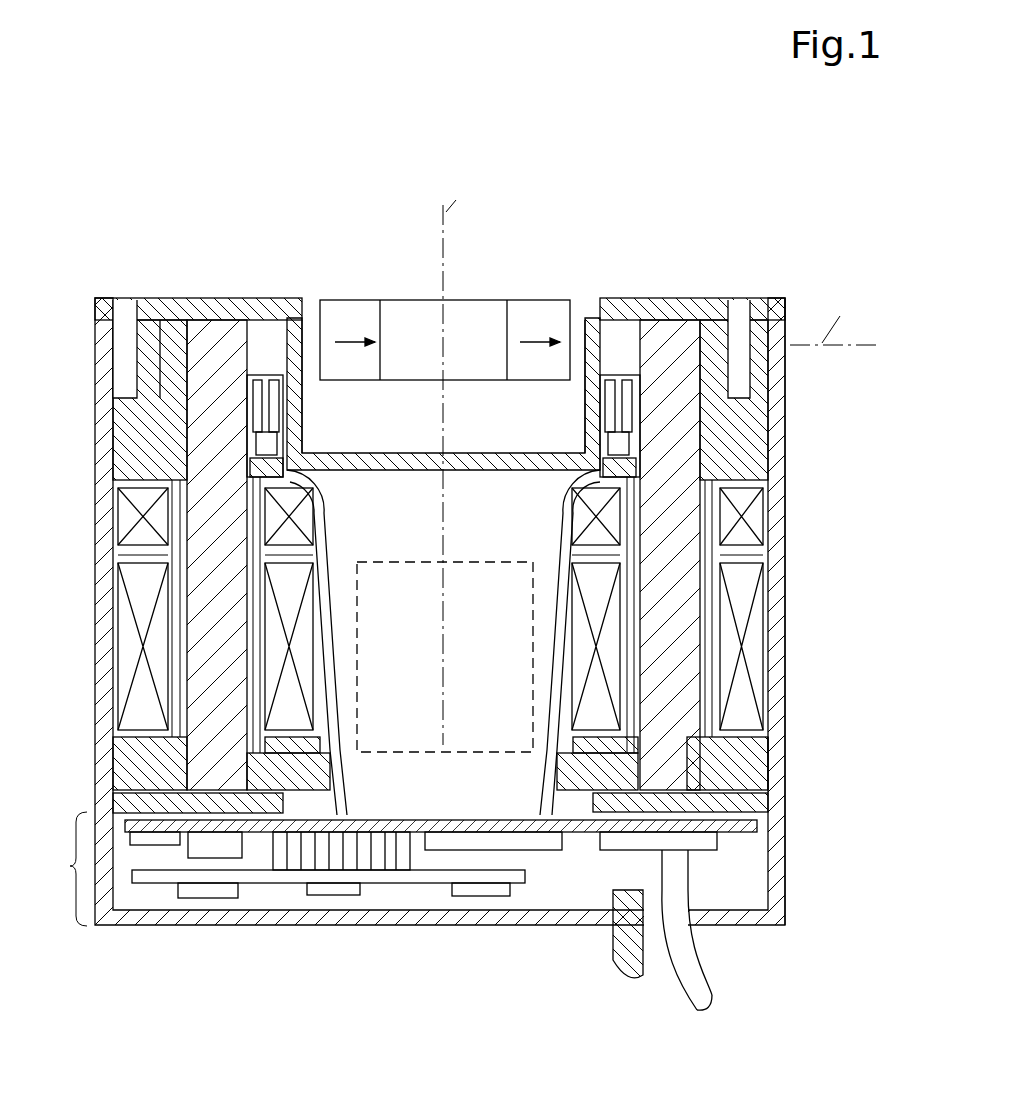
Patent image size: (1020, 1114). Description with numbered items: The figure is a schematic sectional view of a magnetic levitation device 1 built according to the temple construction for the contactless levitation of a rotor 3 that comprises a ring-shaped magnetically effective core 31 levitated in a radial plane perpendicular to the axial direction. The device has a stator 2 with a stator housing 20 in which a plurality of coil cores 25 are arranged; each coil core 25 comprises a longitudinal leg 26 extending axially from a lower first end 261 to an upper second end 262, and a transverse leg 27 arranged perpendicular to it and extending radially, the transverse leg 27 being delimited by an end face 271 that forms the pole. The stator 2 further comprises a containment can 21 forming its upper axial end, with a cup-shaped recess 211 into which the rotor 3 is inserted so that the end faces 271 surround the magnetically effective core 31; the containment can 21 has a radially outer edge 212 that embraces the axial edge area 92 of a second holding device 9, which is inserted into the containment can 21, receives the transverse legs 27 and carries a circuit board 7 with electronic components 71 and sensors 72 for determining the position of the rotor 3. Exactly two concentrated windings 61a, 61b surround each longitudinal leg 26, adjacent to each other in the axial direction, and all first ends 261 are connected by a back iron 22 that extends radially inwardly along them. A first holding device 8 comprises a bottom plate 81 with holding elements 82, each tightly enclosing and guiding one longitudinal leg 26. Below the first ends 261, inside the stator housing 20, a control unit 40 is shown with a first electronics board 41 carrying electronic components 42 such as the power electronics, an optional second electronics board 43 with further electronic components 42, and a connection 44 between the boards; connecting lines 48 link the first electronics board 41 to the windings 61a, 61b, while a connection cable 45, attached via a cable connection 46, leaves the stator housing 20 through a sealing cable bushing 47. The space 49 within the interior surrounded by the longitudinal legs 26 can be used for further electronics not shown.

The magnetic levitation device 1 is at (690, 128).
The stator 2 is at (812, 480).
The rotor 3 is at (497, 300).
The circuit board 7 is at (250, 482).
The first holding device 8 is at (112, 770).
The second holding device 9 is at (120, 397).
The stator housing 20 is at (790, 571).
The containment can 21 is at (712, 298).
The back iron 22 is at (579, 770).
The coil core 25 is at (218, 300).
The longitudinal leg 26 is at (205, 563).
The transverse leg 27 is at (250, 330).
The magnetically effective core 31 is at (355, 300).
The control unit 40 is at (70, 866).
The first electronics board 41 is at (760, 826).
The electronic components 42 is at (156, 845).
The second electronics board 43 is at (173, 882).
The connection 44 is at (370, 870).
The connection cable 45 is at (672, 997).
The cable connection 46 is at (717, 848).
The cable bushing 47 is at (650, 957).
The connecting lines 48 is at (325, 555).
The space 49 is at (410, 565).
The concentrated winding 61a is at (748, 618).
The concentrated winding 61b is at (748, 520).
The electronic components 71 is at (622, 440).
The sensors 72 is at (742, 418).
The bottom plate 81 is at (120, 742).
The holding elements 82 is at (722, 716).
The axial edge area 92 is at (178, 300).
The cup-shaped recess 211 is at (571, 407).
The radially outer edge 212 is at (152, 312).
The first end 261 is at (690, 778).
The second end 262 is at (733, 300).
The end face 271 is at (310, 330).